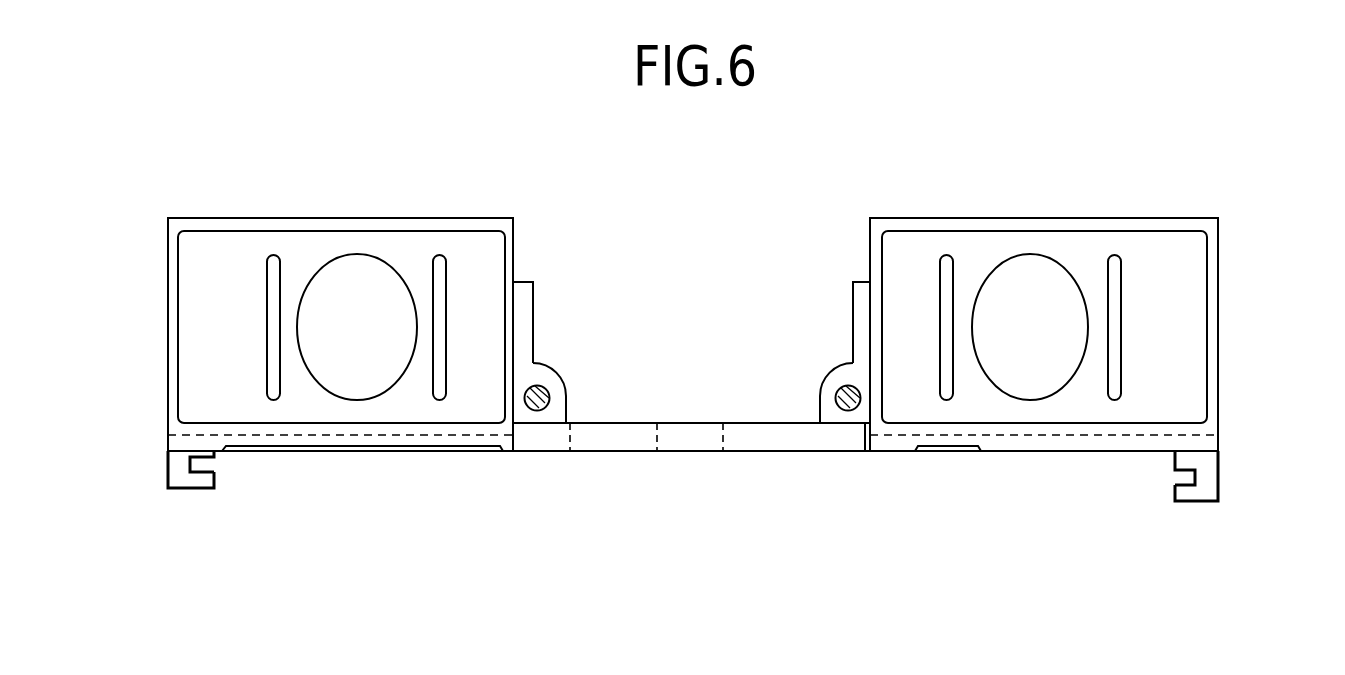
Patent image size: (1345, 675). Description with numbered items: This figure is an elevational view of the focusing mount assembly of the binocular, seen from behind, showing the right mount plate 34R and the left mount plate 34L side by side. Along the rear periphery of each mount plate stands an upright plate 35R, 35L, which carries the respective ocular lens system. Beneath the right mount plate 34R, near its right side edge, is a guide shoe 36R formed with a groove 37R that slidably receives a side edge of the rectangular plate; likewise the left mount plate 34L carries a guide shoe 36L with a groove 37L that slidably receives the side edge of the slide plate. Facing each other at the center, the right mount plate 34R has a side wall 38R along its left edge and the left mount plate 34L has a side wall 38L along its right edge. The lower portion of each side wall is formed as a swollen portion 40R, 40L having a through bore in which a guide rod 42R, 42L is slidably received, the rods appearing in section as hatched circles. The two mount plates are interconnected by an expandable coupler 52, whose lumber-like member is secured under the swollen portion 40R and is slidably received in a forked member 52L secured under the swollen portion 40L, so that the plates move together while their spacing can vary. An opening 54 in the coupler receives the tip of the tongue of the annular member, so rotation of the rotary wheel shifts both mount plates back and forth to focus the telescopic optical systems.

The upright plate 35L is at (168, 236).
The upright plate 35R is at (1220, 256).
The left mount plate 34L is at (345, 447).
The right mount plate 34R is at (945, 452).
The guide shoe 36L is at (176, 467).
The guide shoe 36R is at (1205, 465).
The groove 37L is at (216, 459).
The groove 37R is at (1178, 477).
The side wall 38L is at (523, 305).
The side wall 38R is at (856, 319).
The swollen portion 40L is at (567, 387).
The swollen portion 40R is at (822, 390).
The guide rod 42L is at (537, 411).
The guide rod 42R is at (848, 411).
The expandable coupler 52 is at (745, 421).
The forked member 52L is at (617, 440).
The opening 54 is at (657, 440).